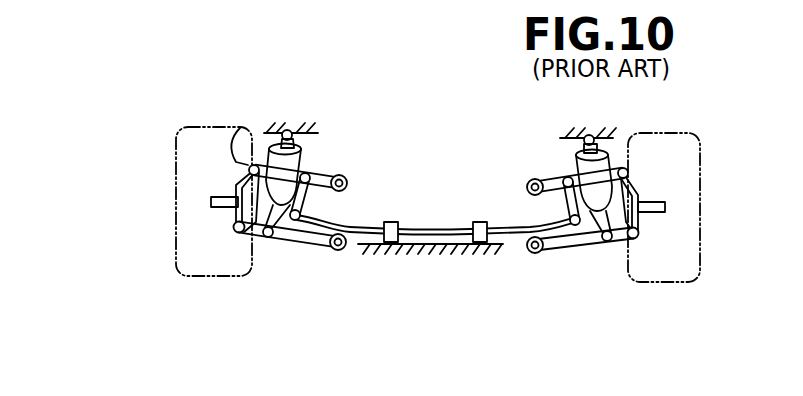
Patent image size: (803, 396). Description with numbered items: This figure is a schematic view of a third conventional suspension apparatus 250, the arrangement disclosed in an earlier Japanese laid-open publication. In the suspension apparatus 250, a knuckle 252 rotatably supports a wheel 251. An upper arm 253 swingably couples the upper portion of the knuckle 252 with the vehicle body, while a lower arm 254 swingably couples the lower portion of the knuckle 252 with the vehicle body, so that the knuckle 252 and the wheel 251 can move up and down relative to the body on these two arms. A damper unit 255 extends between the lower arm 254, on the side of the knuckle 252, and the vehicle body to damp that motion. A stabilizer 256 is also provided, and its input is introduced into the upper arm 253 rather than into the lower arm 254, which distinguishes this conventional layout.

The suspension apparatus 250 is at (134, 86).
The wheel 251 is at (236, 127).
The knuckle 252 is at (240, 128).
The upper arm 253 is at (335, 178).
The lower arm 254 is at (303, 248).
The damper unit 255 is at (306, 175).
The stabilizer 256 is at (340, 228).